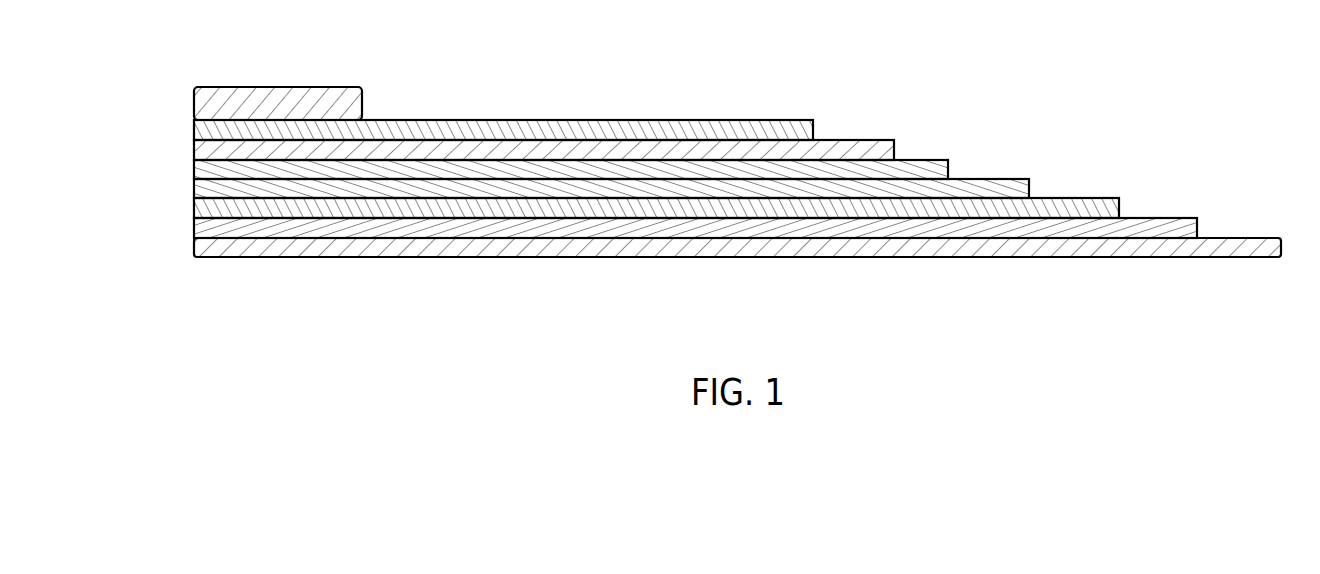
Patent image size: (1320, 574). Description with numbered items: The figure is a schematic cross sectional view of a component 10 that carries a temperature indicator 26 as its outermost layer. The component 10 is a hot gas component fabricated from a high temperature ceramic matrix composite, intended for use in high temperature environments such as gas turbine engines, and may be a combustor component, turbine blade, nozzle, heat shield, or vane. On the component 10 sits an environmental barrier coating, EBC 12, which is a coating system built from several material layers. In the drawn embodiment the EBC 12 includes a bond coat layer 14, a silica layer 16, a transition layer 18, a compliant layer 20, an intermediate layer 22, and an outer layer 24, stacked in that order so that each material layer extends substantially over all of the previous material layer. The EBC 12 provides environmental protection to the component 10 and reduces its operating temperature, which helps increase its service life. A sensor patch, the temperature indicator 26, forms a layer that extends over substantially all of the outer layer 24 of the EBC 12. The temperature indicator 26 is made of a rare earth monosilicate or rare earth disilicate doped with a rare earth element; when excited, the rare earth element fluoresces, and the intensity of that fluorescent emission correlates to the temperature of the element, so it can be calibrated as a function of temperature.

The component 10 is at (315, 258).
The environmental barrier coating (EBC) 12 is at (619, 142).
The bond coat layer 14 is at (1165, 218).
The silica layer 16 is at (1082, 198).
The transition layer 18 is at (1000, 178).
The compliant layer 20 is at (933, 160).
The intermediate layer 22 is at (873, 140).
The outer layer 24 is at (783, 120).
The temperature indicator 26 is at (338, 87).